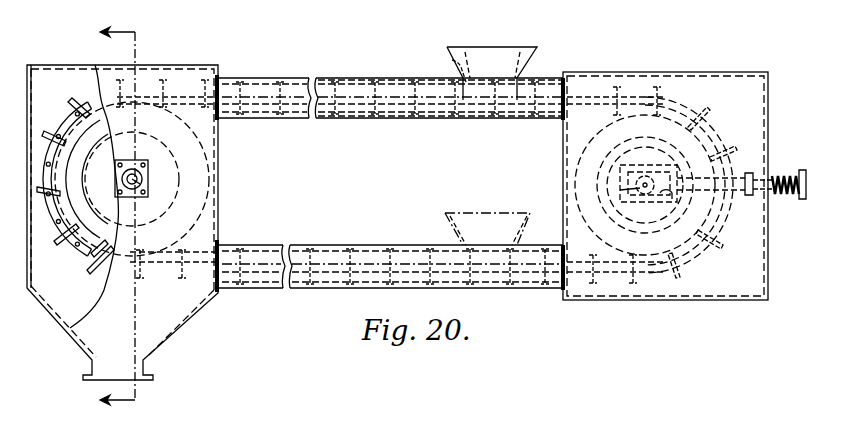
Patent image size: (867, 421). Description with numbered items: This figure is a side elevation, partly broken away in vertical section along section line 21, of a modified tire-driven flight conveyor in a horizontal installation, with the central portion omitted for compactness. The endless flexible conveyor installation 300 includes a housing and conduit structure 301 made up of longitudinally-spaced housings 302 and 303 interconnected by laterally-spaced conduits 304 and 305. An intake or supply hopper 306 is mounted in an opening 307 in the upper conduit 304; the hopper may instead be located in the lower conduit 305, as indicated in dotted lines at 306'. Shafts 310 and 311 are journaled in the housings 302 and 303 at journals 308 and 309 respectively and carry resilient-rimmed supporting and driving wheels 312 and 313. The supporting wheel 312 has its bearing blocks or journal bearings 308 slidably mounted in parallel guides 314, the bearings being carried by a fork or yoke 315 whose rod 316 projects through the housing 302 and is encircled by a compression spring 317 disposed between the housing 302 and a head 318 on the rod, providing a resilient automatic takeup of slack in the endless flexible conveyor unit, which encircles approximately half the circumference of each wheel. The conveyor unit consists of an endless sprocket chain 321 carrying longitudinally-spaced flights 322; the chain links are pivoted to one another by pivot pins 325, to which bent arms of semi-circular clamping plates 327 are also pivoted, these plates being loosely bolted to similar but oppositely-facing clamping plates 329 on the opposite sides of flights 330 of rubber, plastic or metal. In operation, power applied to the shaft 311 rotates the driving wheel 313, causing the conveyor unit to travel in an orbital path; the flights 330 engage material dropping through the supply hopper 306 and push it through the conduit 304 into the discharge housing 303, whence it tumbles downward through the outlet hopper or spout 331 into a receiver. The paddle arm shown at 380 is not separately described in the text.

The section line 21 is at (99, 218).
The endless flexible conveyor installation 300 is at (228, 74).
The housing and conduit structure 301 is at (382, 119).
The housing 302 is at (703, 72).
The housing 303 is at (182, 66).
The conduit 304 is at (355, 78).
The conduit 305 is at (333, 245).
The intake or supply hopper 306 is at (492, 58).
The supply hopper in optional position 306' is at (484, 217).
The opening 307 is at (453, 61).
The bearing blocks or journal bearings 308 is at (629, 181).
The journal 309 is at (150, 176).
The shaft 310 is at (620, 192).
The shaft 311 is at (140, 184).
The supporting wheel 312 is at (592, 138).
The driving wheel 313 is at (196, 134).
The parallel guides 314 is at (652, 168).
The fork or yoke 315 is at (742, 168).
The rod 316 is at (773, 170).
The compression spring 317 is at (780, 176).
The head 318 is at (805, 198).
The endless sprocket chain 321 is at (62, 136).
The flights 322 is at (55, 240).
The pivot pins 325 is at (86, 238).
The semi-circular clamping plates 327 is at (96, 64).
The clamping plates 329 is at (62, 130).
The flights 330 is at (72, 100).
The outlet hopper or spout 331 is at (173, 328).
The paddle arm 380 is at (88, 268).